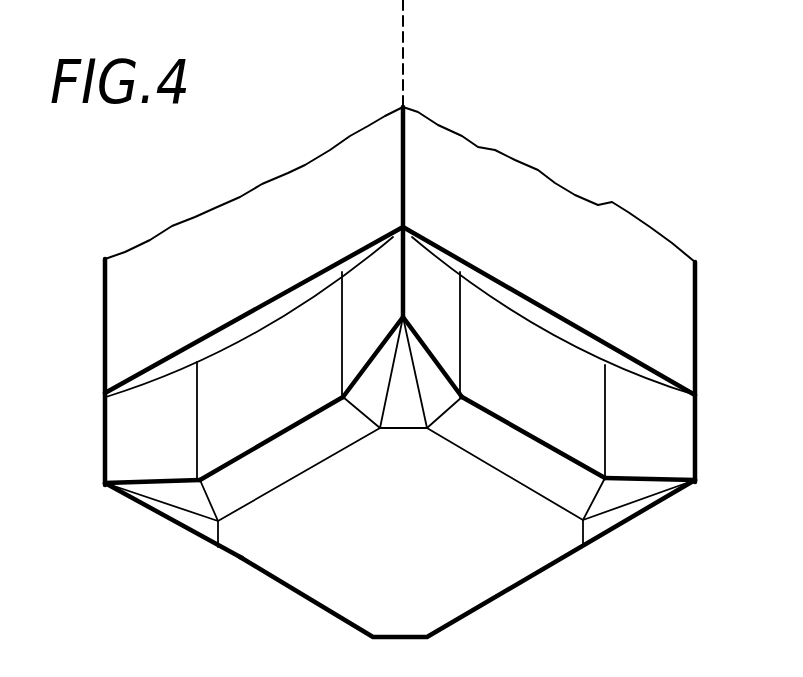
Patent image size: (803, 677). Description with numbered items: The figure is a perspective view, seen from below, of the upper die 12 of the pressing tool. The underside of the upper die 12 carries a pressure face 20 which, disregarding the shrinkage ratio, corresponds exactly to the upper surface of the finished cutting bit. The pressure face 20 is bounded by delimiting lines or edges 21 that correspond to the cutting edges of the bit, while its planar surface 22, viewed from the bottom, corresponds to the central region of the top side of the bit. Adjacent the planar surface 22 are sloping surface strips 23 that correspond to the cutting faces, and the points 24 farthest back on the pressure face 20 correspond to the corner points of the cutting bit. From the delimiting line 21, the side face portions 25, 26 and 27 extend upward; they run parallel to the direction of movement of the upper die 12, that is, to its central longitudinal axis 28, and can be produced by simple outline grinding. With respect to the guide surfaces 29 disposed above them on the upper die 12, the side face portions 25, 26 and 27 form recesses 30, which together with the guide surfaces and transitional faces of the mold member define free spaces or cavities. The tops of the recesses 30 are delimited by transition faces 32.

The upper die 12 is at (205, 587).
The pressure face 20 is at (623, 492).
The delimiting lines or edges 21 is at (580, 465).
The planar surface 22 is at (327, 583).
The sloping surface strips 23 is at (483, 445).
The points farthest back on pressure face 24 is at (410, 304).
The side face portion 25 is at (155, 393).
The side face portion 26 is at (263, 340).
The side face portion 27 is at (355, 282).
The central longitudinal axis 28 is at (407, 65).
The guide surfaces 29 is at (170, 243).
The recesses 30 is at (367, 322).
The transition faces 32 is at (215, 340).